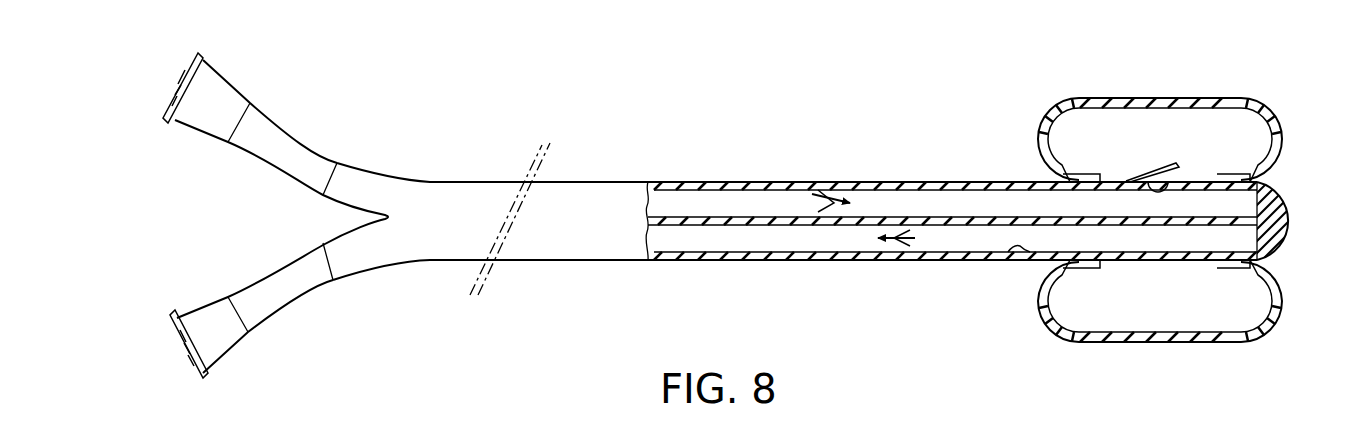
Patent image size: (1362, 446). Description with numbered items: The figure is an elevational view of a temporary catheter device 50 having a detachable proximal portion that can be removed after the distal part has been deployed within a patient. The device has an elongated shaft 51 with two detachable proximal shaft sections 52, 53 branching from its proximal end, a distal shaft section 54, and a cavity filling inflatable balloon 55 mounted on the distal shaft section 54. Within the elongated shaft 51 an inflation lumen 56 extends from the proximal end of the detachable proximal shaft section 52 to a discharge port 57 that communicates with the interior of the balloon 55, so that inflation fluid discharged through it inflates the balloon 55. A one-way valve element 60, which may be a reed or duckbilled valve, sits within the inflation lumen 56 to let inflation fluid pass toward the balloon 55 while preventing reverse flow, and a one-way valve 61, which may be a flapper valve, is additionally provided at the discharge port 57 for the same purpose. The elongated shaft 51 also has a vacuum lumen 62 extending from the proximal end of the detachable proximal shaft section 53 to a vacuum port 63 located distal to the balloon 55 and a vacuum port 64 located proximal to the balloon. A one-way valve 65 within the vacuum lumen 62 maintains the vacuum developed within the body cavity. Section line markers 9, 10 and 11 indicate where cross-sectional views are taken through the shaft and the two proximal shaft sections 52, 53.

The section line 9- 9 is at (702, 160).
The section line 10- 10 is at (306, 97).
The section line 11- 11 is at (256, 239).
The catheter device 50 is at (592, 85).
The elongated shaft 51 is at (632, 180).
The detachable proximal shaft section 52 is at (343, 175).
The detachable proximal shaft section 53 is at (317, 278).
The distal shaft section 54 is at (843, 261).
The cavity filling inflatable balloon 55 is at (1195, 97).
The inflation lumen 56 is at (977, 202).
The discharge port 57 is at (1168, 182).
The one-way valve element 60 is at (808, 190).
The one-way valve 61 is at (1152, 173).
The vacuum lumen 62 is at (685, 237).
The vacuum port 63 is at (1280, 242).
The vacuum port 64 is at (1017, 261).
The one-way valve 65 is at (912, 240).